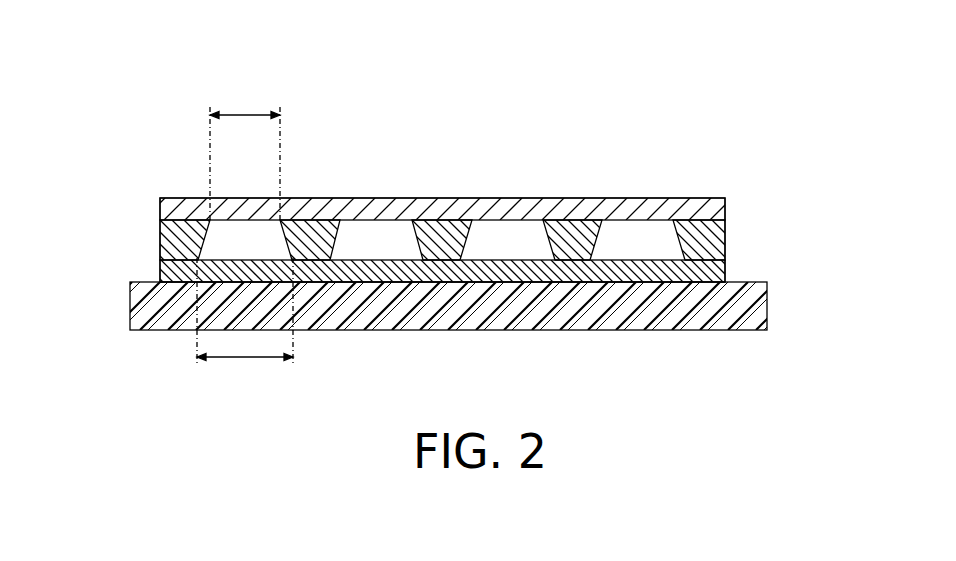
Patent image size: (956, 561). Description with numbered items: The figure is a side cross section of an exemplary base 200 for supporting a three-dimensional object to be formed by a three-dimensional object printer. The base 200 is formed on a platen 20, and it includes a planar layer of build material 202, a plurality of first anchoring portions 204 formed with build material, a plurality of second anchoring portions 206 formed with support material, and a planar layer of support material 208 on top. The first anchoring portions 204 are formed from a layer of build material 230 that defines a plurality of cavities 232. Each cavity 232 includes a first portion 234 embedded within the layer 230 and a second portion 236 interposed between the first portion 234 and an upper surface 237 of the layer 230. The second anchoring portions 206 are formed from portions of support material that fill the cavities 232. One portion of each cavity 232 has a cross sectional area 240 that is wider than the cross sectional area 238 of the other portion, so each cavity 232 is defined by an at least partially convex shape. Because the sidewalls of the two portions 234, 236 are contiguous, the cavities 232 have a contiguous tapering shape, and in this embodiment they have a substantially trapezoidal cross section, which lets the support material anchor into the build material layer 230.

The platen 20 is at (130, 305).
The base 200 is at (333, 367).
The planar layer of build material 202 is at (160, 268).
The first anchoring portions 204 is at (180, 232).
The second anchoring portions 206 is at (248, 227).
The planar layer of support material 208 is at (725, 210).
The layer of build material 230 is at (725, 245).
The cavities 232 is at (229, 230).
The first portion of cavity 234 is at (279, 222).
The second portion of cavity 236 is at (240, 248).
The upper surface 237 is at (163, 198).
The cross sectional area of second portion 238 is at (243, 115).
The cross sectional area of first portion 240 is at (240, 362).